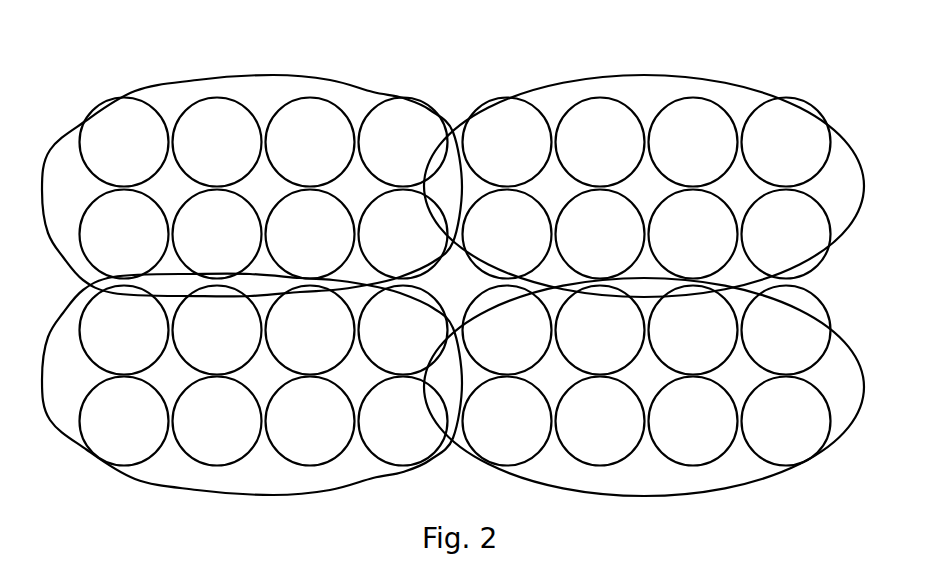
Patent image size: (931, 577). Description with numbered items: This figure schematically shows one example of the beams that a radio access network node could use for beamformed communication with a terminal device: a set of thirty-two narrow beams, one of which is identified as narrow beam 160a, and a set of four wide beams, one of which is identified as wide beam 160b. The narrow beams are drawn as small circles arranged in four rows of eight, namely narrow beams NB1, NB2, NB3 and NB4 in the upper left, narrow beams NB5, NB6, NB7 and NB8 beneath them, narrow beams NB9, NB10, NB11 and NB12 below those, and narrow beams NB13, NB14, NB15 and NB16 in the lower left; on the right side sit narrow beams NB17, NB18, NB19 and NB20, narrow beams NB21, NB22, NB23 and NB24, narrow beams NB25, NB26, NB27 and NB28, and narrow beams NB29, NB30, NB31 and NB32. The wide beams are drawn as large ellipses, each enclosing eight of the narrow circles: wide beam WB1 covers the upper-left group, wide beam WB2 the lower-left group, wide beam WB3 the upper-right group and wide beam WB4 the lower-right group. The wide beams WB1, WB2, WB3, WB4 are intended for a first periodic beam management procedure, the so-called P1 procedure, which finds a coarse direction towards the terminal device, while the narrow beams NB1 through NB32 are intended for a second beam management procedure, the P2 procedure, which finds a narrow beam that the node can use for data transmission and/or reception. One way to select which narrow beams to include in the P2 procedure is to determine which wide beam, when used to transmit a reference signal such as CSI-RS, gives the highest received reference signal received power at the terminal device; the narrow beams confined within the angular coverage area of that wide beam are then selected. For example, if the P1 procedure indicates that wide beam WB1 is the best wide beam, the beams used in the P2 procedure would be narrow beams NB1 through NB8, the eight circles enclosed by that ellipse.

The narrow beam 160a is at (124, 120).
The wide beam 160b is at (252, 159).
The wide beam WB1 is at (252, 185).
The wide beam WB2 is at (252, 384).
The wide beam WB3 is at (644, 186).
The wide beam WB4 is at (644, 387).
The narrow beam NB1 is at (124, 142).
The narrow beam NB2 is at (217, 142).
The narrow beam NB3 is at (310, 142).
The narrow beam NB4 is at (403, 142).
The narrow beam NB5 is at (124, 234).
The narrow beam NB6 is at (217, 234).
The narrow beam NB7 is at (310, 234).
The narrow beam NB8 is at (403, 234).
The narrow beam NB9 is at (124, 330).
The narrow beam NB10 is at (217, 330).
The narrow beam NB11 is at (310, 330).
The narrow beam NB12 is at (403, 330).
The narrow beam NB13 is at (124, 421).
The narrow beam NB14 is at (217, 421).
The narrow beam NB15 is at (310, 421).
The narrow beam NB16 is at (403, 421).
The narrow beam NB17 is at (507, 142).
The narrow beam NB18 is at (600, 142).
The narrow beam NB19 is at (693, 142).
The narrow beam NB20 is at (786, 142).
The narrow beam NB21 is at (507, 234).
The narrow beam NB22 is at (600, 234).
The narrow beam NB23 is at (693, 234).
The narrow beam NB24 is at (786, 234).
The narrow beam NB25 is at (507, 330).
The narrow beam NB26 is at (600, 330).
The narrow beam NB27 is at (693, 330).
The narrow beam NB28 is at (786, 330).
The narrow beam NB29 is at (507, 421).
The narrow beam NB30 is at (600, 421).
The narrow beam NB31 is at (693, 421).
The narrow beam NB32 is at (786, 421).